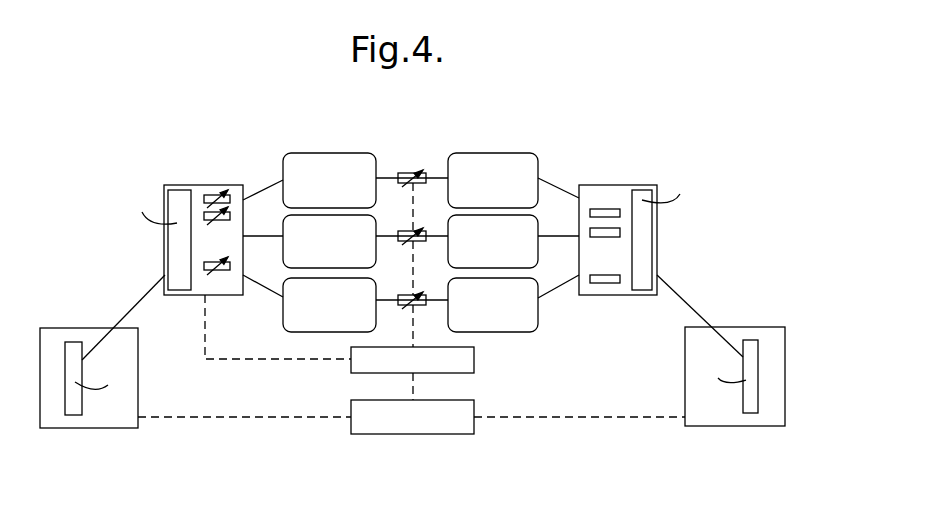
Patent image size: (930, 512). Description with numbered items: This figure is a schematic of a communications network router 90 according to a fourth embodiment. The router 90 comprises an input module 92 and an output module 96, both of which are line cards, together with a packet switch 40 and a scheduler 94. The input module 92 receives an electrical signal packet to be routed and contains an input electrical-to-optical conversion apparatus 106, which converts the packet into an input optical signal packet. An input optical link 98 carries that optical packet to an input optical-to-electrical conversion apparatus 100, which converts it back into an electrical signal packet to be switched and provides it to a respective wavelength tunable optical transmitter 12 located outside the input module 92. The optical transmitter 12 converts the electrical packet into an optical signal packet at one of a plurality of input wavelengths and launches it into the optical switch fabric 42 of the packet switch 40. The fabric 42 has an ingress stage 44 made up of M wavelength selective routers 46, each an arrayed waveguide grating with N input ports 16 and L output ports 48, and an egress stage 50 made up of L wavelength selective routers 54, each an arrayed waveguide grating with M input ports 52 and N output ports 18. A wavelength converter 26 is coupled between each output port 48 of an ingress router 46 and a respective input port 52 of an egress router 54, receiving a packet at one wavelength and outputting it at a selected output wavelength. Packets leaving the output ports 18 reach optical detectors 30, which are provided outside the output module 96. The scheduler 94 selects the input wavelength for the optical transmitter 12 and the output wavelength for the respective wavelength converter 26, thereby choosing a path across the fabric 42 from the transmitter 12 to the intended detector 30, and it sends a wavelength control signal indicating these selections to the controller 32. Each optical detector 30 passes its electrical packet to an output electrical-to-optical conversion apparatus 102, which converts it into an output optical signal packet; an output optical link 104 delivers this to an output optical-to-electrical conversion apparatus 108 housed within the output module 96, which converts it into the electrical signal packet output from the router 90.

The wavelength tunable optical transmitter 12 is at (211, 195).
The input port 16 is at (283, 300).
The output port 18 is at (548, 170).
The wavelength converter 26 is at (425, 302).
The optical detector 30 is at (601, 283).
The controller 32 is at (452, 366).
The packet switch 40 is at (575, 368).
The optical switch fabric 42 is at (285, 336).
The ingress stage 44 is at (293, 150).
The wavelength selective router 46 is at (306, 332).
The output port 48 is at (377, 174).
The egress stage 50 is at (443, 143).
The input port 52 is at (448, 216).
The wavelength selective router 54 is at (520, 153).
The communications network router 90 is at (288, 442).
The input module 92 is at (115, 417).
The scheduler 94 is at (440, 425).
The output module 96 is at (703, 408).
The input optical link 98 is at (143, 304).
The input optical-to-electrical signal conversion apparatus 100 is at (168, 263).
The output electrical-to-optical signal conversion apparatus 102 is at (655, 247).
The output optical link 104 is at (690, 304).
The input electrical-to-optical signal conversion apparatus 106 is at (75, 342).
The output optical-to-electrical signal conversion apparatus 108 is at (750, 414).